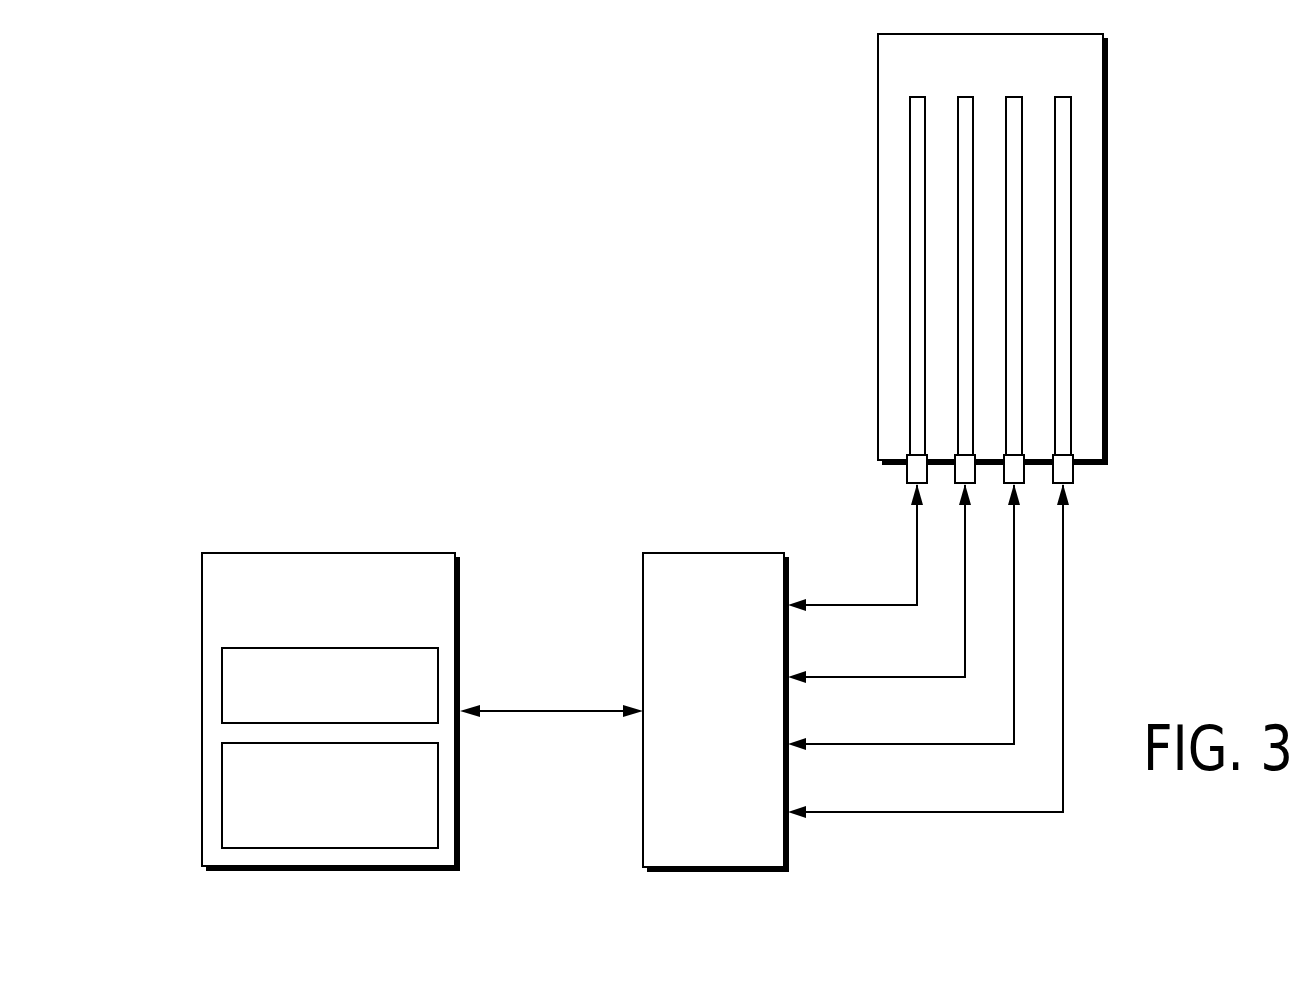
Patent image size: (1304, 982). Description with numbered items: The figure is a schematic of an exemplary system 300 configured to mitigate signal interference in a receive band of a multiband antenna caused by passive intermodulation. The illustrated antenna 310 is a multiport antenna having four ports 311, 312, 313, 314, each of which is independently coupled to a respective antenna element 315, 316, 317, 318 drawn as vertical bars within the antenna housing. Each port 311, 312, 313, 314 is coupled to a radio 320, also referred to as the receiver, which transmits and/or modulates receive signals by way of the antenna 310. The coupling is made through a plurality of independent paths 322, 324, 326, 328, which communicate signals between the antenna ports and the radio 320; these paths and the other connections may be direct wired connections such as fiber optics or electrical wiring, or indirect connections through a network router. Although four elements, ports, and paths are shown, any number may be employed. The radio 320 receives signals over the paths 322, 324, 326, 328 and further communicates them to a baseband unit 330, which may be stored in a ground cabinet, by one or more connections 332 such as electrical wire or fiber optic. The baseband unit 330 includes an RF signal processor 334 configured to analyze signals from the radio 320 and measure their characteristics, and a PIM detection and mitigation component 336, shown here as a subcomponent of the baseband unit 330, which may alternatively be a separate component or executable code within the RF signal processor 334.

The system 300 is at (352, 227).
The antenna 310 is at (928, 34).
The port 311 is at (905, 474).
The port 312 is at (955, 478).
The port 313 is at (1026, 478).
The port 314 is at (1075, 474).
The antenna element 315 is at (910, 128).
The antenna element 316 is at (958, 160).
The antenna element 317 is at (1022, 160).
The antenna element 318 is at (1071, 128).
The radio 320 is at (690, 553).
The path 322 is at (832, 608).
The path 324 is at (832, 679).
The path 326 is at (832, 746).
The path 328 is at (832, 814).
The baseband unit 330 is at (252, 553).
The connection 332 is at (525, 713).
The RF signal processor 334 is at (222, 686).
The PIM detection and mitigation component 336 is at (222, 797).